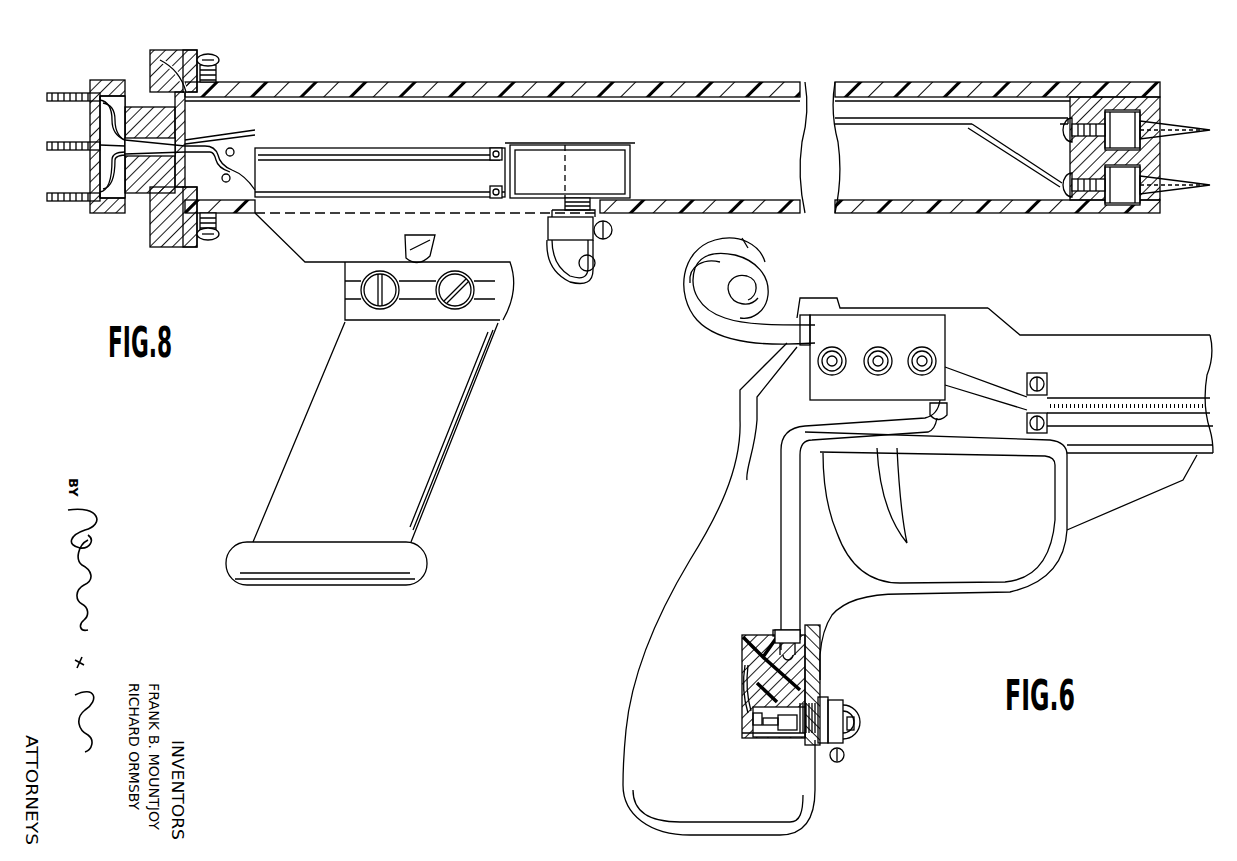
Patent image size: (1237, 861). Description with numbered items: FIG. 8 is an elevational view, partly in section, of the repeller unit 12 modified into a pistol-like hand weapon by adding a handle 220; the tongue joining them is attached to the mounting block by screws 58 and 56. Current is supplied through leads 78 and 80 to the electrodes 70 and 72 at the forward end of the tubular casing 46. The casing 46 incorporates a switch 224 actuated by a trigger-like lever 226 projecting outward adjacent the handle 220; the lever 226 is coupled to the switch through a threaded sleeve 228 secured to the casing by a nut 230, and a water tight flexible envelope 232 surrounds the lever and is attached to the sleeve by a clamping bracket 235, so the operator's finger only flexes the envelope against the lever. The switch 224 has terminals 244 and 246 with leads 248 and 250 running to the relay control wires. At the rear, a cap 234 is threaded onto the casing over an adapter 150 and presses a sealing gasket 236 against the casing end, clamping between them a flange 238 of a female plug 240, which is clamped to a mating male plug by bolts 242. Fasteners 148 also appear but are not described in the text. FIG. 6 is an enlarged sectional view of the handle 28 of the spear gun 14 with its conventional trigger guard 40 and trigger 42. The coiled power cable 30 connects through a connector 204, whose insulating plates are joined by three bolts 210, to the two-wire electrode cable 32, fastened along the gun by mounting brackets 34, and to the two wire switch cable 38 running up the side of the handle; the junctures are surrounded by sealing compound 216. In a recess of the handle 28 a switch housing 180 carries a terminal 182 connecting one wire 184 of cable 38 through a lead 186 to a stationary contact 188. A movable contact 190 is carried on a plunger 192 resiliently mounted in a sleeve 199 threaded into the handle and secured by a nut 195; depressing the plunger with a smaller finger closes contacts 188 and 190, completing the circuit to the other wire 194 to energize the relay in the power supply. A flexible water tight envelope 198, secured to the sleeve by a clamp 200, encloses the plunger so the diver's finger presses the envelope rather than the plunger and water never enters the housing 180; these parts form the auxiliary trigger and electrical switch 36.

In FIG. 8, the repeller unit 12 is at (627, 80).
In FIG. 8, the casing 46 is at (905, 82).
In FIG. 8, the lead 80 is at (1015, 118).
In FIG. 8, the lead 78 is at (1012, 168).
In FIG. 8, the electrode 72 is at (1172, 128).
In FIG. 8, the electrode 70 is at (1172, 192).
In FIG. 8, the cap 234 is at (157, 50).
In FIG. 8, the sealing gasket 236 is at (168, 230).
In FIG. 8, the adapter 150 is at (195, 52).
In FIG. 8, the screw 148 is at (215, 60).
In FIG. 8, the female plug 240 is at (105, 78).
In FIG. 8, the bolts 242 is at (65, 90).
In FIG. 8, the flange 238 is at (167, 200).
In FIG. 8, the terminal 246 is at (490, 152).
In FIG. 8, the lead 250 is at (443, 160).
In FIG. 8, the lead 248 is at (375, 190).
In FIG. 8, the switch 224 is at (635, 158).
In FIG. 8, the threaded sleeve 228 is at (577, 203).
In FIG. 8, the terminal 244 is at (497, 200).
In FIG. 8, the nut 230 is at (548, 228).
In FIG. 8, the clamping bracket 235 is at (612, 230).
In FIG. 8, the trigger-like lever 226 is at (596, 262).
In FIG. 8, the flexible envelope 232 is at (578, 285).
In FIG. 8, the screw 58 is at (362, 290).
In FIG. 8, the screw 56 is at (475, 295).
In FIG. 8, the handle 220 is at (318, 405).
In FIG. 6, the power cable 30 is at (705, 307).
In FIG. 6, the sealing compound 216 is at (807, 322).
In FIG. 6, the bolts 210 is at (878, 350).
In FIG. 6, the connector 204 is at (908, 315).
In FIG. 6, the two-wire cable 32 is at (1100, 395).
In FIG. 6, the spear gun 14 is at (1160, 348).
In FIG. 6, the mounting brackets 34 is at (1048, 385).
In FIG. 6, the trigger 42 is at (893, 497).
In FIG. 6, the trigger guard 40 is at (1057, 557).
In FIG. 6, the two wire cable 38 is at (782, 522).
In FIG. 6, the handle 28 is at (660, 620).
In FIG. 6, the wire 184 is at (772, 634).
In FIG. 6, the terminal 182 is at (758, 655).
In FIG. 6, the switch housing 180 is at (742, 675).
In FIG. 6, the lead 186 is at (745, 705).
In FIG. 6, the stationary switch contact 188 is at (757, 735).
In FIG. 6, the movable contact 190 is at (780, 740).
In FIG. 6, the wire 194 is at (820, 665).
In FIG. 6, the nut 195 is at (828, 700).
In FIG. 6, the auxiliary trigger and electrical switch 36 is at (845, 712).
In FIG. 6, the flexible water tight envelope 198 is at (864, 725).
In FIG. 6, the plunger 192 is at (853, 740).
In FIG. 6, the sleeve 199 is at (803, 750).
In FIG. 6, the clamp 200 is at (838, 763).